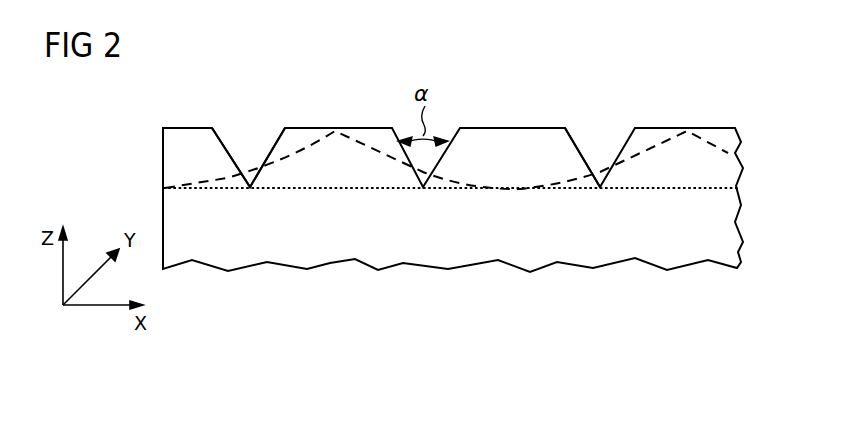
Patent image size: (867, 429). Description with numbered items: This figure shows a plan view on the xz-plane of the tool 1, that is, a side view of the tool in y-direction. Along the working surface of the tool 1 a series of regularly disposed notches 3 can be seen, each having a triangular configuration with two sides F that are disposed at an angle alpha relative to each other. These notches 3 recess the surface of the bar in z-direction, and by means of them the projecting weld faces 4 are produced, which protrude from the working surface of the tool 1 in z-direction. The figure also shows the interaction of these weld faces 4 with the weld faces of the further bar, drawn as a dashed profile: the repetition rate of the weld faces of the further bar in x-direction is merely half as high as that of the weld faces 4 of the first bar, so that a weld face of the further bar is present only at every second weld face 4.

The tool 1 is at (144, 155).
The notches 3 is at (250, 154).
The weld faces 4 is at (648, 128).
The sides F is at (575, 153).